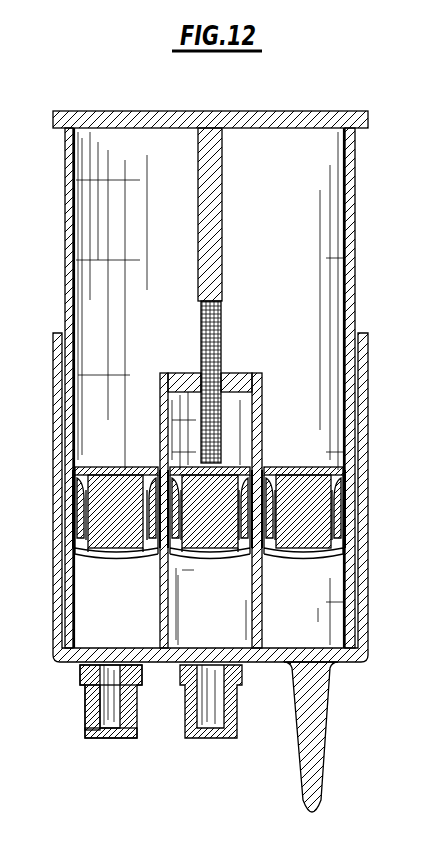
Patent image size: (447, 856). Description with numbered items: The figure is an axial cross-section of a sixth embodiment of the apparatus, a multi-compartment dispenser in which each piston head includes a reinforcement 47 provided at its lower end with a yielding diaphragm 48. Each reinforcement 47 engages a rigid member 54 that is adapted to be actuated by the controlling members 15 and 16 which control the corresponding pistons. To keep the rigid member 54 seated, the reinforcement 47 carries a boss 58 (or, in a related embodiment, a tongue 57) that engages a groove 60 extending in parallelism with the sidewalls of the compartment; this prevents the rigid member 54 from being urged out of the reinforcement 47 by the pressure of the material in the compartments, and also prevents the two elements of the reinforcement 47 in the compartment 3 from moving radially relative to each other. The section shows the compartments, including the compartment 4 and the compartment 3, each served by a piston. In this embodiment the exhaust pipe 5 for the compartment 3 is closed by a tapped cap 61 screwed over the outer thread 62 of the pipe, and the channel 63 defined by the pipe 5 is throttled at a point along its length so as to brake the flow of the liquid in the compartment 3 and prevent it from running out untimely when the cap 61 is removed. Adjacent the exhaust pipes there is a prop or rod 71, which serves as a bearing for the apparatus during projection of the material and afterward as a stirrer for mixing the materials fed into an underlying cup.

The controlling member 15 is at (350, 198).
The controlling member 16 is at (218, 188).
The boss 58 is at (160, 462).
The rigid member 54 is at (118, 470).
The tongue 57 is at (62, 512).
The reinforcement 47 is at (62, 534).
The yielding diaphragm 48 is at (57, 563).
The groove 60 is at (88, 556).
The compartment 4 is at (211, 606).
The compartment 3 is at (320, 611).
The exhaust pipe 5 is at (85, 722).
The outer thread 62 is at (80, 672).
The channel 63 is at (85, 698).
The tapped cap 61 is at (118, 738).
The prop or rod 71 is at (315, 731).